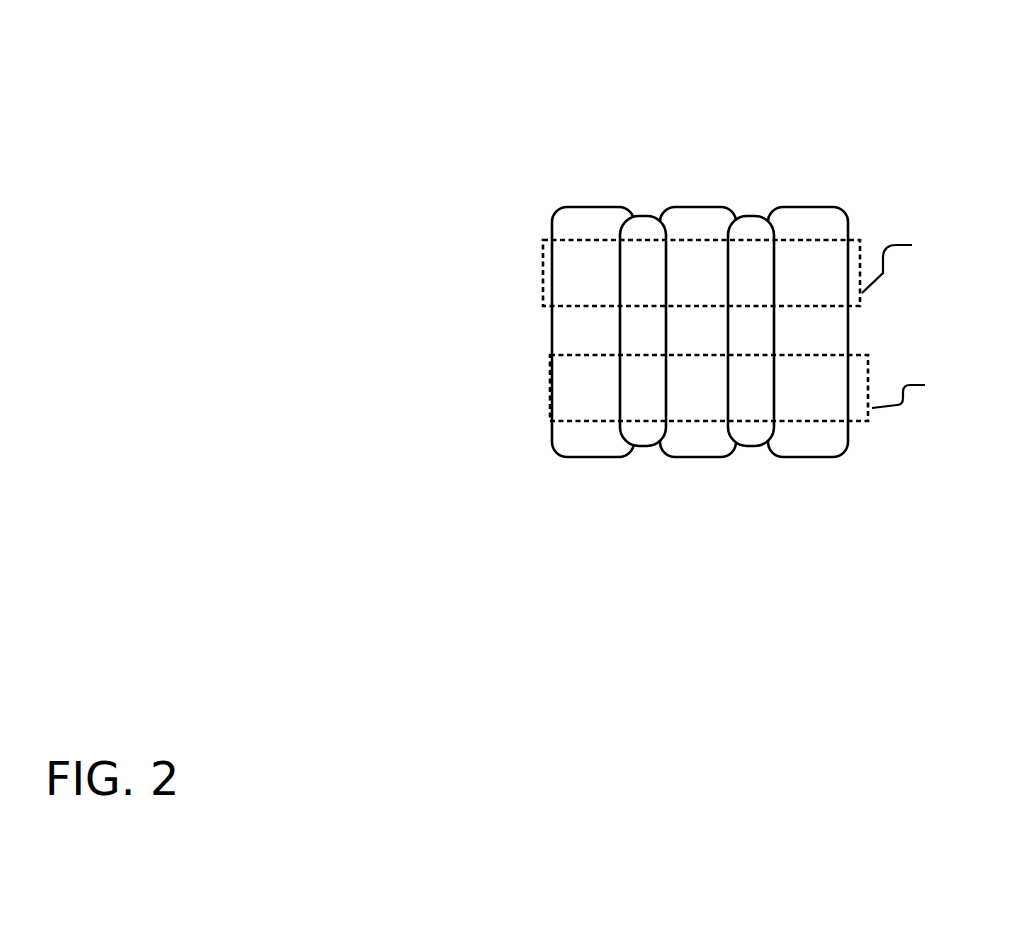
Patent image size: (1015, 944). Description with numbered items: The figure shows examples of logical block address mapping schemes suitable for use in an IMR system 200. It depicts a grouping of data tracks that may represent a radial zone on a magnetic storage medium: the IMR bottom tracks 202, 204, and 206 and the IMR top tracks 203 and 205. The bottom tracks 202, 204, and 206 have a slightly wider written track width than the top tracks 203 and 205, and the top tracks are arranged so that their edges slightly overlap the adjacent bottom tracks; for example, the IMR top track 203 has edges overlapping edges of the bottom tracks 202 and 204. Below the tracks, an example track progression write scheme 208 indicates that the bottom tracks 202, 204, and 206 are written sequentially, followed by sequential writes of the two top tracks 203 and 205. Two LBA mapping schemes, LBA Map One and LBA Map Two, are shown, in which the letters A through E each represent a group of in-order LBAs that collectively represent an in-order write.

The IMR system 200 is at (430, 88).
The IMR bottom track 202 is at (590, 207).
The IMR top track 203 is at (642, 217).
The IMR bottom track 204 is at (693, 207).
The IMR top track 205 is at (749, 216).
The IMR bottom track 206 is at (810, 207).
The track progression write scheme 208 is at (520, 482).